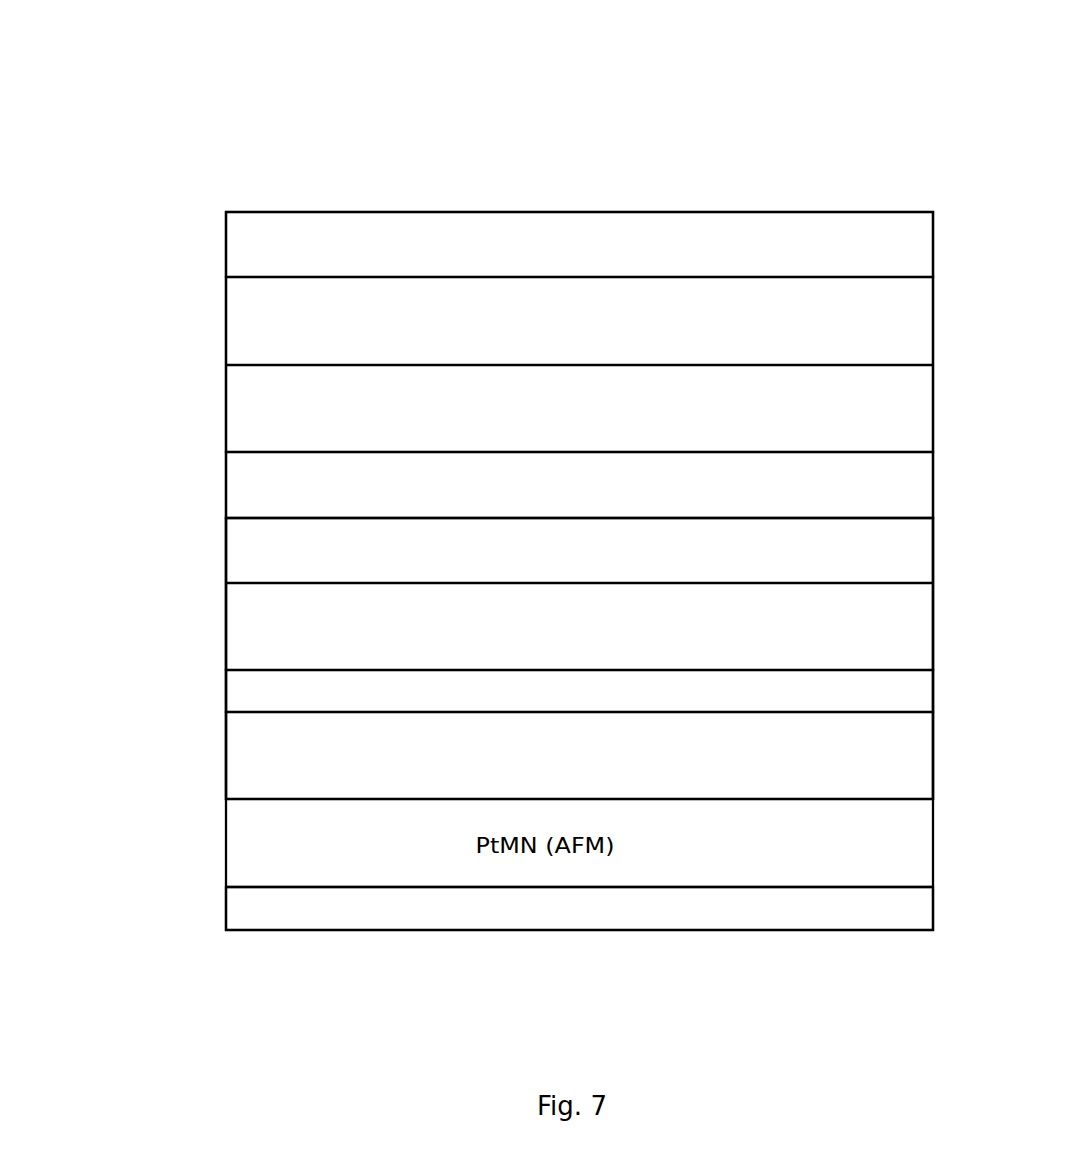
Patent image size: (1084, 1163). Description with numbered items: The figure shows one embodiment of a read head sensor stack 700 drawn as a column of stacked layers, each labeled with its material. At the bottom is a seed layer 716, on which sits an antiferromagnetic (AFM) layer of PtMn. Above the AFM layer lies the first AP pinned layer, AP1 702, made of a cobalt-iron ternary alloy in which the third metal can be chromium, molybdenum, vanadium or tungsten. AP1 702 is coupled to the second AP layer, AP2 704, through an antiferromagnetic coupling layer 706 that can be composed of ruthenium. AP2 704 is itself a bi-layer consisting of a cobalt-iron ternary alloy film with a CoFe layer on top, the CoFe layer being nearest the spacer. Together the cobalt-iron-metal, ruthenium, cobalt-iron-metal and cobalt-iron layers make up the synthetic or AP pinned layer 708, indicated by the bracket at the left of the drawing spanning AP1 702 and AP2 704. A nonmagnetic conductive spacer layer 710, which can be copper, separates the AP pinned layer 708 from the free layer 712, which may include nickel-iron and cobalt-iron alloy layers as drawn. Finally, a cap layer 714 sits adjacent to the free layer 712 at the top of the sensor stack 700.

The read head sensor stack 700 is at (778, 160).
The first AP pinned layer (AP1) 702 is at (72, 712).
The second AP layer (AP2) 704 is at (215, 670).
The antiferromagnetic coupling layer 706 is at (273, 702).
The AP pinned layer 708 is at (215, 799).
The nonmagnetic conductive spacer layer 710 is at (270, 506).
The free layer 712 is at (247, 430).
The cap layer 714 is at (268, 257).
The seed layer 716 is at (252, 908).